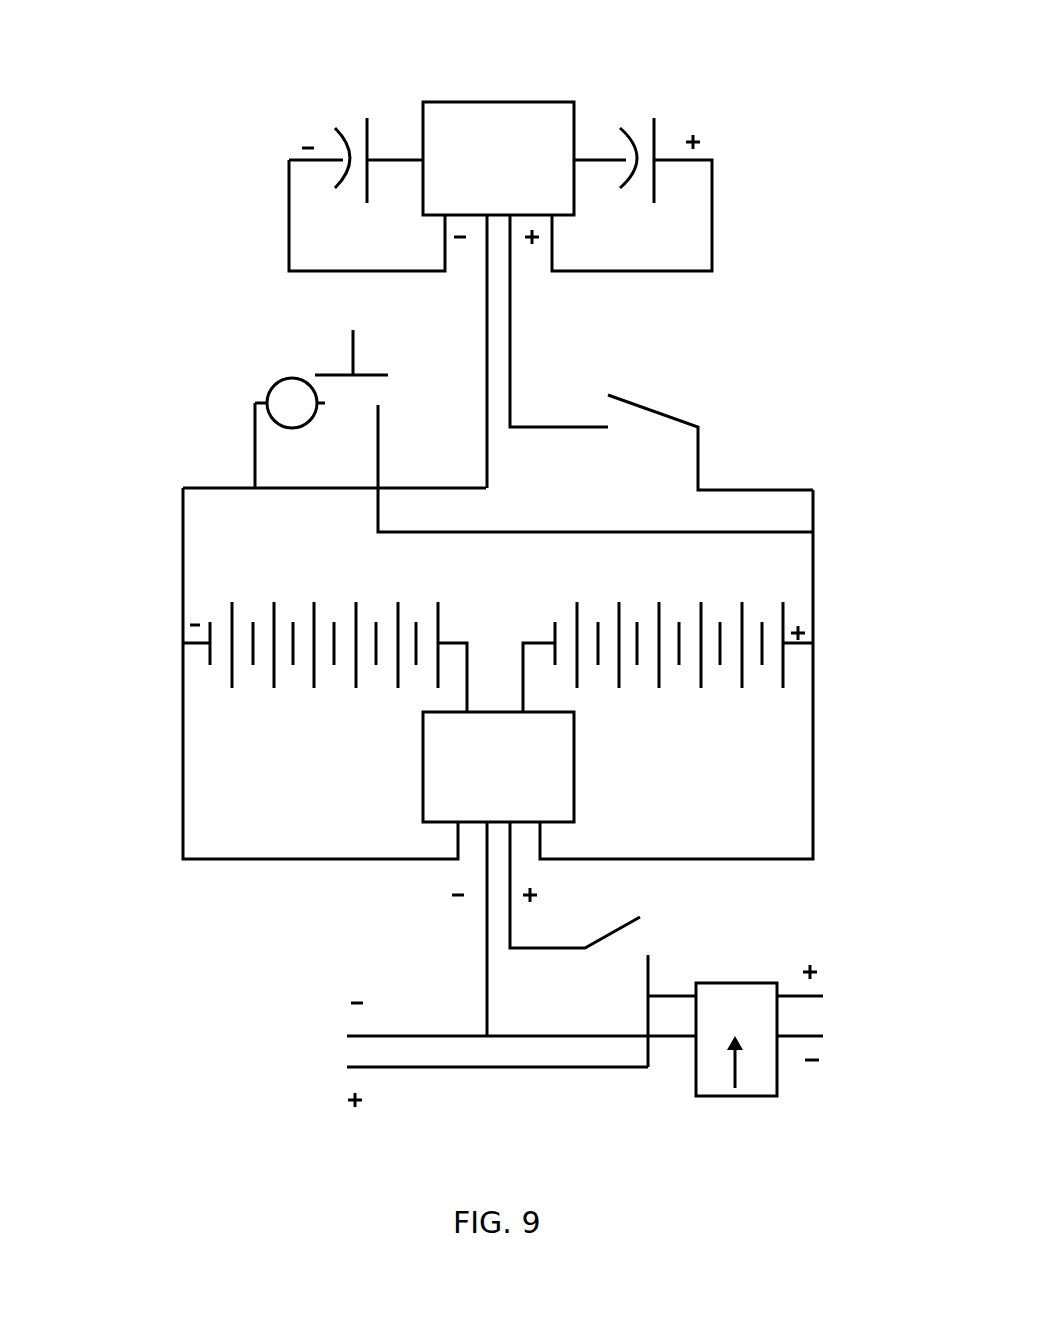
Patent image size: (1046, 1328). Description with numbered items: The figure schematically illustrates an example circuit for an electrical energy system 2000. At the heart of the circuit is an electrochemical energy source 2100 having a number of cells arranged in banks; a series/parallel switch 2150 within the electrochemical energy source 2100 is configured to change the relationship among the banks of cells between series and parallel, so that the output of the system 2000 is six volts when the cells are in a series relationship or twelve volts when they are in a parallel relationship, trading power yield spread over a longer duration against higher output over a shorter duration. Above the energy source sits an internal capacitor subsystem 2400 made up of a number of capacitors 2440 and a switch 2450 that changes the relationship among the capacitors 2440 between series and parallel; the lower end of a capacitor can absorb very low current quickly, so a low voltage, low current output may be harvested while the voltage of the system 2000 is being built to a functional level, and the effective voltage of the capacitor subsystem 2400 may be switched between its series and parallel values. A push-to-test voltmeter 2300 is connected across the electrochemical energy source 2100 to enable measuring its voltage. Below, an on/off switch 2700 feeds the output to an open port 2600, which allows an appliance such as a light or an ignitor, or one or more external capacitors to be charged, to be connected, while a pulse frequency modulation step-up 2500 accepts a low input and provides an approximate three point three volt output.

The electrical energy system 2000 is at (158, 60).
The internal capacitor subsystem 2400 is at (790, 158).
The switch 2450 is at (543, 100).
The capacitors 2440 is at (288, 247).
The push-to-test voltmeter 2300 is at (218, 406).
The electrochemical energy source 2100 is at (850, 580).
The series/parallel switching circuit 2150 is at (423, 790).
The on/off switch 2700 is at (692, 931).
The open port 2600 is at (286, 1048).
The pulse frequency modulation step-up 2500 is at (815, 1126).